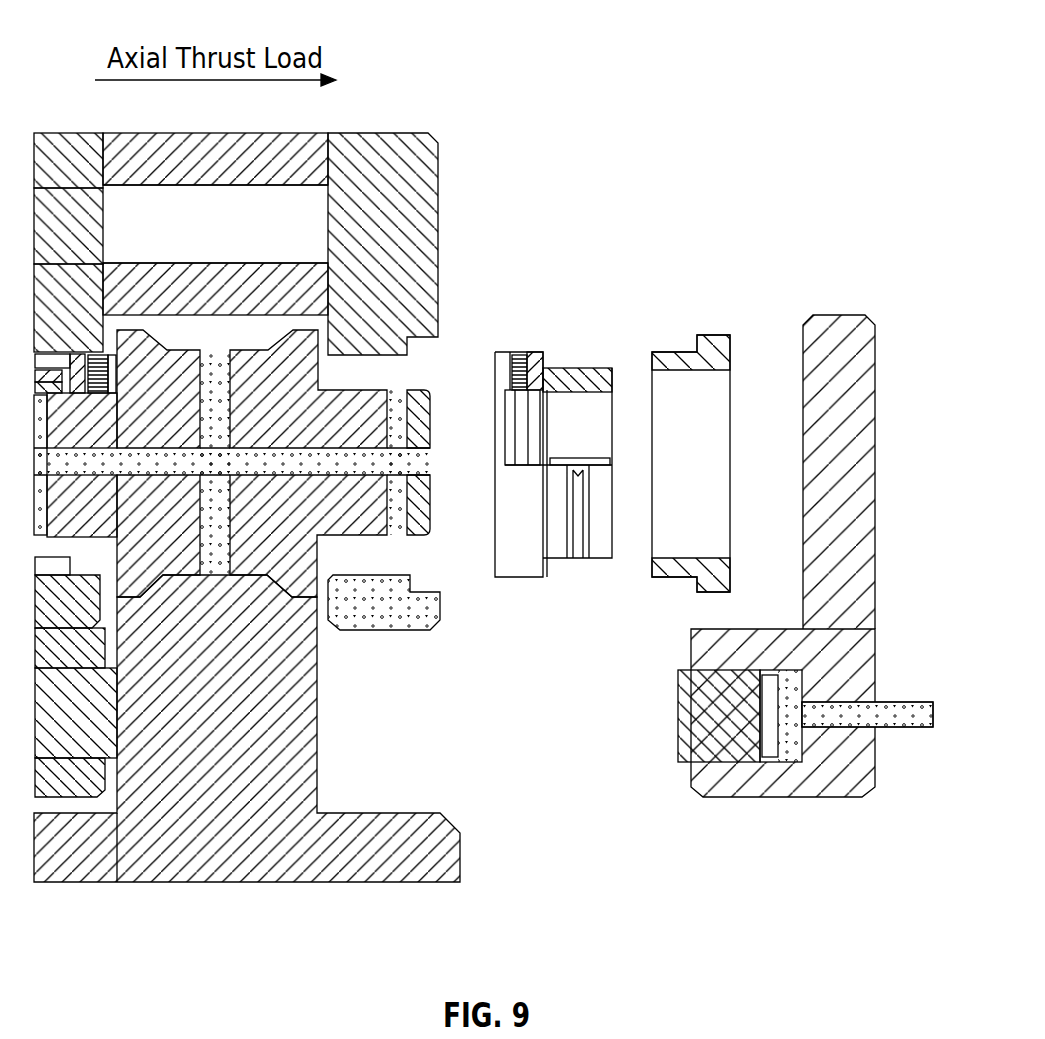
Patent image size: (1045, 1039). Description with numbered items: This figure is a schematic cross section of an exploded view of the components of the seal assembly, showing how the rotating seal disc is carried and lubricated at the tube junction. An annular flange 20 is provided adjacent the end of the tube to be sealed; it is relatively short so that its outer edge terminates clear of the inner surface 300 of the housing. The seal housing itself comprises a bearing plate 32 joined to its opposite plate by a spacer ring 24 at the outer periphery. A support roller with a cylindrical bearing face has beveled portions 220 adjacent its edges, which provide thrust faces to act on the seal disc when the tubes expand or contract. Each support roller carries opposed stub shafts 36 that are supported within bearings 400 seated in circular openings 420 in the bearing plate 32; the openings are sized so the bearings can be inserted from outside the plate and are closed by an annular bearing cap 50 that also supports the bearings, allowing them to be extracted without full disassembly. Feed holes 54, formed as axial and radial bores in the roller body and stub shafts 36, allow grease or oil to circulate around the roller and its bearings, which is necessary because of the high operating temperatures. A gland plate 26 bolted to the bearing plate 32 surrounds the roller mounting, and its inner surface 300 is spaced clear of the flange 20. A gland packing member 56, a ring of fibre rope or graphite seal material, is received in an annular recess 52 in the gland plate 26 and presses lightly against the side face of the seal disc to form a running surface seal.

The annular flange 20 is at (412, 863).
The spacer ring 24 is at (232, 238).
The gland plate 26 is at (863, 442).
The bearing plate 32 is at (458, 241).
The stub shaft 36 is at (415, 535).
The annular bearing cap 50 is at (672, 351).
The annular recess 52 is at (733, 669).
The feed hole 54 is at (218, 356).
The gland packing member 56 is at (692, 715).
The beveled portion 220 is at (288, 573).
The inner surface 300 is at (835, 797).
The bearing 400 is at (547, 363).
The circular opening 420 is at (408, 631).